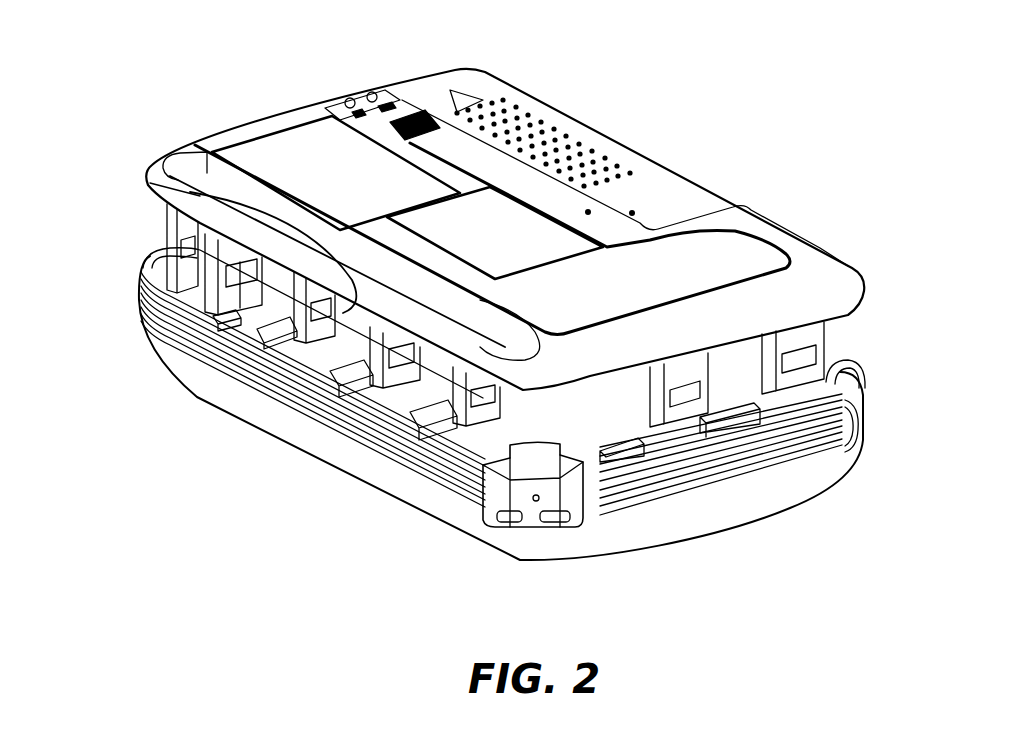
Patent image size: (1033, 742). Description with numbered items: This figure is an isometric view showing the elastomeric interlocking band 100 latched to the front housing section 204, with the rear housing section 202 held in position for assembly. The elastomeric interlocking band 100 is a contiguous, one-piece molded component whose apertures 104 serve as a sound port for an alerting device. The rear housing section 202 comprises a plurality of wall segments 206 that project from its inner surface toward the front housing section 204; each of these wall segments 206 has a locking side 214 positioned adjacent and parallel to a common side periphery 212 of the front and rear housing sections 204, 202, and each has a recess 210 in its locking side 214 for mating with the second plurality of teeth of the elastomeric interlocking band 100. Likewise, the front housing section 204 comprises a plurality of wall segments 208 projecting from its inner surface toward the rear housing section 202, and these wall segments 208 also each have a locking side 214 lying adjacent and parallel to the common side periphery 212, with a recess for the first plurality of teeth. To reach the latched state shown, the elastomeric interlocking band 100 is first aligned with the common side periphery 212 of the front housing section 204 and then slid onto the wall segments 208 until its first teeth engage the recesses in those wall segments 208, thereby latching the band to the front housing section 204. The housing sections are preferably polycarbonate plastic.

The elastomeric interlocking band 100 is at (767, 450).
The apertures 104 is at (553, 522).
The rear housing section 202 is at (817, 245).
The front housing section 204 is at (430, 517).
The wall segments 206 is at (393, 373).
The wall segments 208 is at (283, 332).
The recess 210 is at (393, 345).
The common side periphery 212 is at (293, 108).
The locking side 214 is at (662, 392).